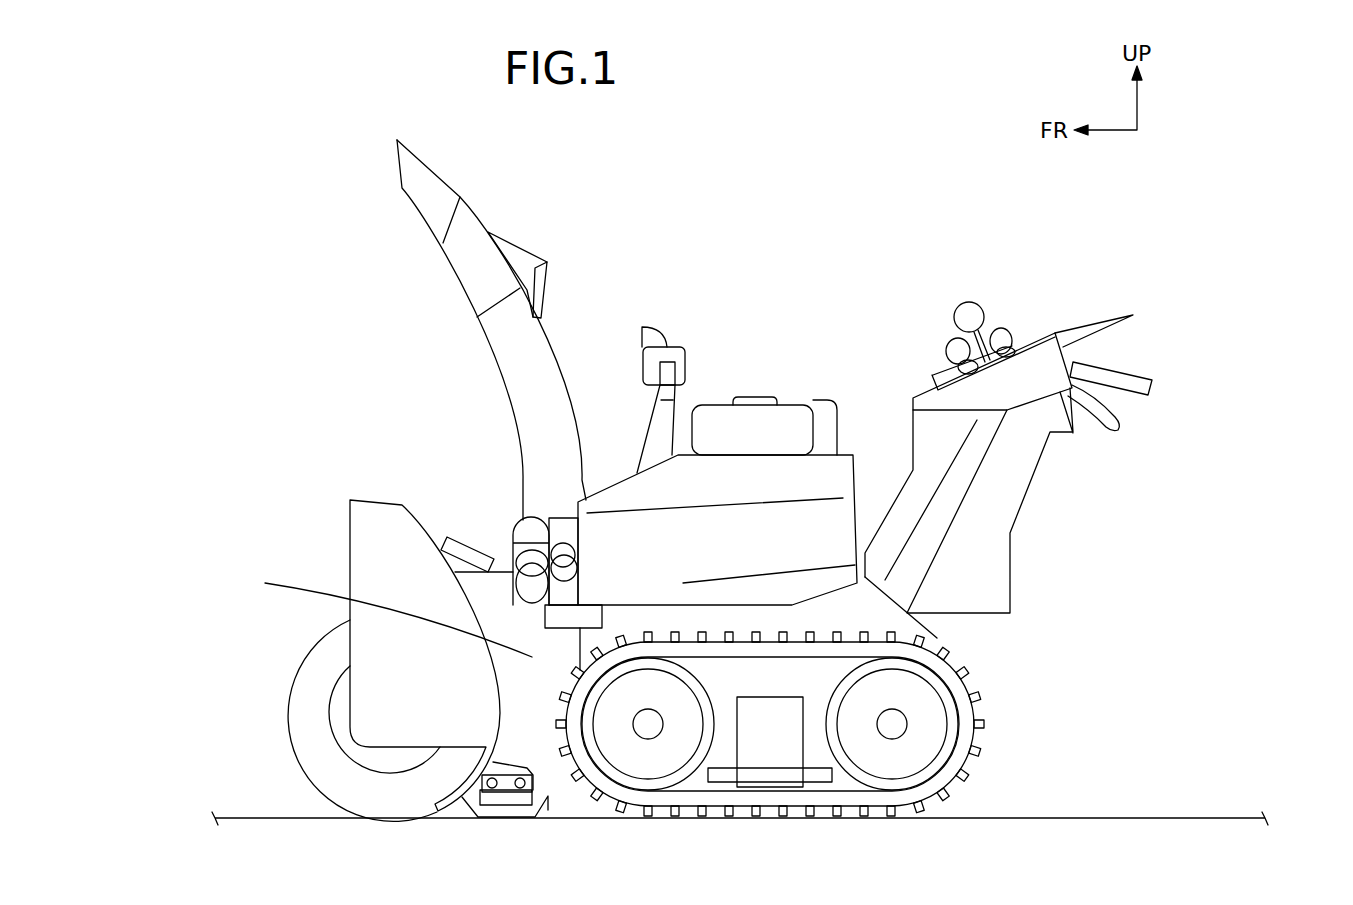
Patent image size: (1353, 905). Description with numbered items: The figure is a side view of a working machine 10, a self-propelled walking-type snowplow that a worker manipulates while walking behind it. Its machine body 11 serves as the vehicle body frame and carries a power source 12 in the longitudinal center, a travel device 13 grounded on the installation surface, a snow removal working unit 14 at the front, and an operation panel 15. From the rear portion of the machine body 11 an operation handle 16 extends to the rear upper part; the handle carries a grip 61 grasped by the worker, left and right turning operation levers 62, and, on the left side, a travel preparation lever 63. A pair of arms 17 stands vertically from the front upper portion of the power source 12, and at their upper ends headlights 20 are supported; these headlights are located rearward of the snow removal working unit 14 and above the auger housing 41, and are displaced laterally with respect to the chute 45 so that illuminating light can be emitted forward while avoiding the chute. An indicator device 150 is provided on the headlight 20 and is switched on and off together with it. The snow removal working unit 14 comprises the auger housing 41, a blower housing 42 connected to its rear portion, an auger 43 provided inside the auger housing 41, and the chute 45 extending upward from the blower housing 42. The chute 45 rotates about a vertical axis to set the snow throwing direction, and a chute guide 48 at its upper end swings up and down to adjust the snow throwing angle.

The working machine 10 is at (302, 172).
The machine body 11 is at (903, 625).
The power source 12 is at (857, 487).
The travel device 13 is at (988, 723).
The snow removal working unit 14 is at (322, 500).
The operation panel 15 is at (1028, 327).
The operation handle 16 is at (1160, 383).
The arm 17 is at (660, 415).
The headlight 20 is at (672, 347).
The auger housing 41 is at (362, 549).
The blower housing 42 is at (384, 614).
The auger 43 is at (307, 718).
The chute 45 is at (494, 384).
The chute guide 48 is at (435, 208).
The grip 61 is at (1120, 382).
The turning operation lever 62 is at (1120, 425).
The travel preparation lever 63 is at (1108, 318).
The indicator device 150 is at (647, 330).